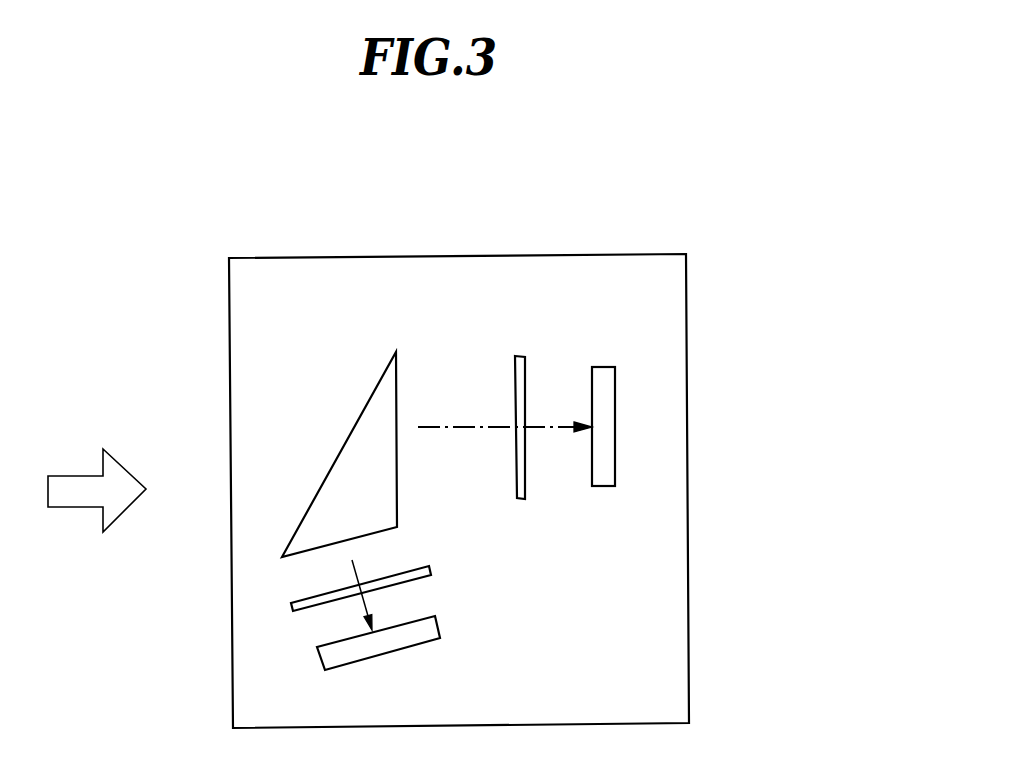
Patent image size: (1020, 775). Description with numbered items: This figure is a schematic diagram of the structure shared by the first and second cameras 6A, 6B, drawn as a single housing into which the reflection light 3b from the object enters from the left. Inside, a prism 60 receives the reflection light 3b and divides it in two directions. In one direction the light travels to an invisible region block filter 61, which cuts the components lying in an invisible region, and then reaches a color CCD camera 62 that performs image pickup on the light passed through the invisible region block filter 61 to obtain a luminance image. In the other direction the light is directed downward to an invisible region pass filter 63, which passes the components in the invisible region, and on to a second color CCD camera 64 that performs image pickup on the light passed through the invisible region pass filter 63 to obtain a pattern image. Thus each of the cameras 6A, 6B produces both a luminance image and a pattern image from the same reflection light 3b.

The reflection light 3b is at (72, 476).
The first camera 6A is at (548, 491).
The second camera 6B is at (686, 292).
The prism 60 is at (347, 435).
The invisible region block filter 61 is at (518, 356).
The color CCD camera 62 is at (615, 457).
The invisible region pass filter 63 is at (290, 605).
The color CCD camera 64 is at (320, 658).